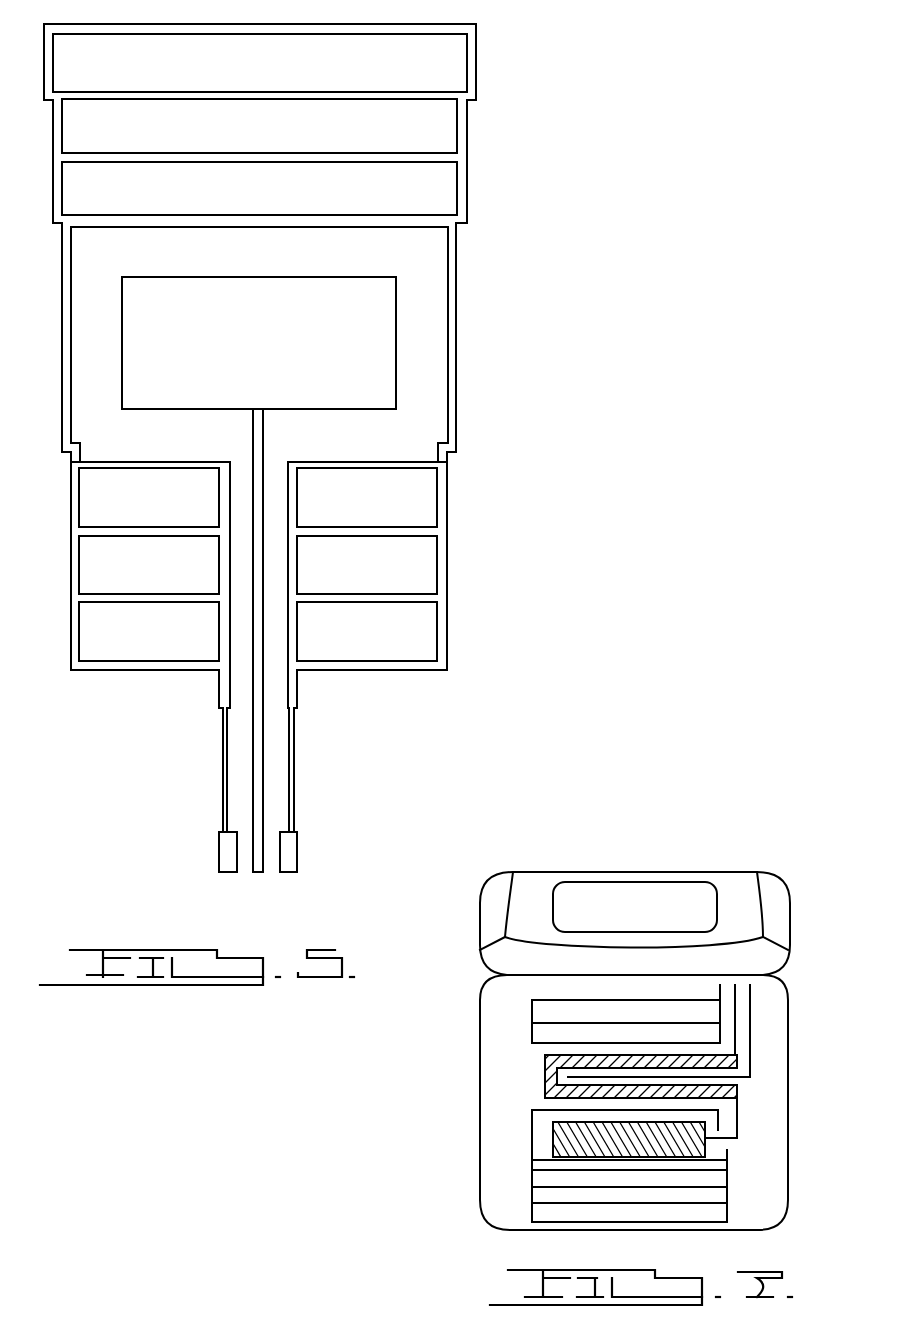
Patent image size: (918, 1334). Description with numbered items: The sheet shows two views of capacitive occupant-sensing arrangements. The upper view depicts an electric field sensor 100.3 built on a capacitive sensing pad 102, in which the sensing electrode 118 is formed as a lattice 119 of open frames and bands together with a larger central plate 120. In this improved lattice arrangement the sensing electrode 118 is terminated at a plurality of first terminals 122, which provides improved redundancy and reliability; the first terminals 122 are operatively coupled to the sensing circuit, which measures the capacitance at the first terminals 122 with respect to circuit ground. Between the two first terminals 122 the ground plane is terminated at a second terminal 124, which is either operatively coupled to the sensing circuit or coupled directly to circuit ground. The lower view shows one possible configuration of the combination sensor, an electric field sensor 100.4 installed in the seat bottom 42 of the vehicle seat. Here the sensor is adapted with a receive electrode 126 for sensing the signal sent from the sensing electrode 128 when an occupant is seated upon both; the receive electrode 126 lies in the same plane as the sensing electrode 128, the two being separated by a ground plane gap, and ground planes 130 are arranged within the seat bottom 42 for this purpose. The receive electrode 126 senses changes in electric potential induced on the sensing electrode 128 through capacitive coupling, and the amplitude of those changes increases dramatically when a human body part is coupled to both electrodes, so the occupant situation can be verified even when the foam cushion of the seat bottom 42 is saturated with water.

In FIG. 6, the capacitive sensor variant 100.3 is at (515, 78).
In FIG. 7, the electric field sensor 100.4 is at (790, 871).
In FIG. 6, the lattice 119 is at (498, 165).
In FIG. 6, the central electrode plate 120 is at (396, 345).
In FIG. 6, the sensing electrode 118 is at (447, 548).
In FIG. 6, the capacitive sensing pad 102 is at (370, 728).
In FIG. 7, the capacitive sensing pad 102 is at (543, 1130).
In FIG. 6, the first terminals 122 is at (226, 873).
In FIG. 6, the second terminal 124 is at (258, 872).
In FIG. 7, the receive electrode 126 is at (750, 1008).
In FIG. 7, the sensing electrode 128 is at (528, 1072).
In FIG. 7, the ground planes 130 is at (728, 1063).
In FIG. 7, the seat bottom 42 is at (788, 1187).